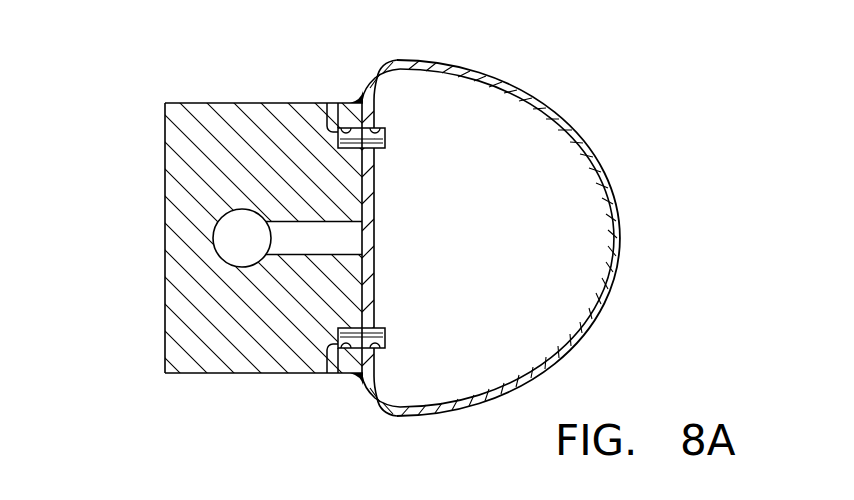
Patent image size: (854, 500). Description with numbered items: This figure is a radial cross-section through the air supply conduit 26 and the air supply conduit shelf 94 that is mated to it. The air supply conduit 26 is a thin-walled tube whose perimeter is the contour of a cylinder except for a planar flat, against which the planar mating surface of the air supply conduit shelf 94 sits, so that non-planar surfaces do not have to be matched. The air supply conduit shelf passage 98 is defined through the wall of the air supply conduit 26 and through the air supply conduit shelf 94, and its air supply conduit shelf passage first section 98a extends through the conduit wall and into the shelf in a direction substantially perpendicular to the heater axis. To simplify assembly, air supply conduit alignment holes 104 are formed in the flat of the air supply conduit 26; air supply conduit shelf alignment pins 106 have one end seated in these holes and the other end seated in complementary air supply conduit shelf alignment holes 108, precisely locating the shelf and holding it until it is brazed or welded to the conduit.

The air supply conduit 26 is at (590, 150).
The air supply conduit shelf 94 is at (182, 114).
The air supply conduit shelf passage 98 is at (287, 314).
The air supply conduit shelf passage first section 98a is at (290, 238).
The air supply conduit alignment hole 104 is at (381, 128).
The air supply conduit shelf alignment pin 106 is at (385, 137).
The air supply conduit shelf alignment hole 108 is at (332, 102).